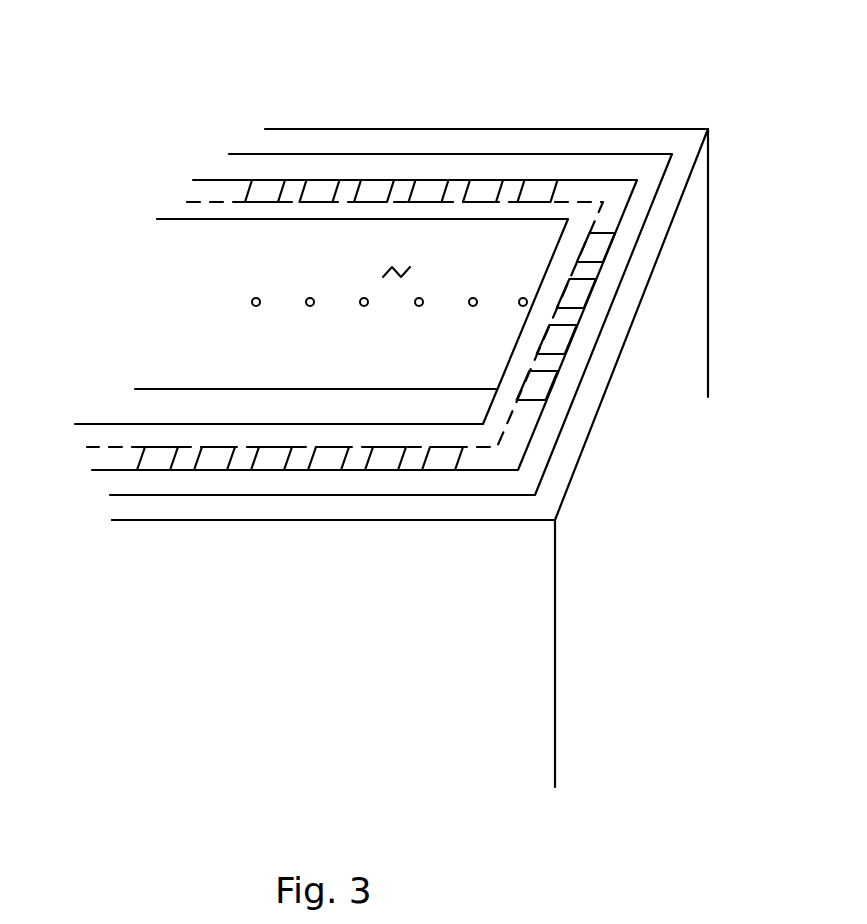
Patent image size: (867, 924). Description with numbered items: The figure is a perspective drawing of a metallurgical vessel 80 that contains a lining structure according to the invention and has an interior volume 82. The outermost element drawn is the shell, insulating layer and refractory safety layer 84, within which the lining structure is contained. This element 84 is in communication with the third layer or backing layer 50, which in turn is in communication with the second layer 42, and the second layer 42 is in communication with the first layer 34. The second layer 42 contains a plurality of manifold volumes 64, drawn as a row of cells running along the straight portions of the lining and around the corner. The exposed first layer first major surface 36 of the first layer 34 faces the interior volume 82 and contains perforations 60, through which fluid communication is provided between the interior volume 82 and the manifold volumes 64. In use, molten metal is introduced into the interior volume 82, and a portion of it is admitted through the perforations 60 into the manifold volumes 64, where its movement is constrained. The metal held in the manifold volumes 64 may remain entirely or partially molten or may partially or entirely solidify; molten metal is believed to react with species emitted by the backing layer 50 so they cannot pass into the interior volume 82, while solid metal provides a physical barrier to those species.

The metallurgical vessel 80 is at (400, 76).
The interior volume 82 is at (108, 266).
The first layer 34 is at (72, 433).
The first layer first major surface 36 is at (398, 261).
The perforations 60 is at (252, 302).
The manifold volumes 64 is at (158, 453).
The shell, insulating layer and refractory safety layer 84 is at (112, 522).
The third layer or backing layer 50 is at (112, 488).
The second layer 42 is at (82, 465).